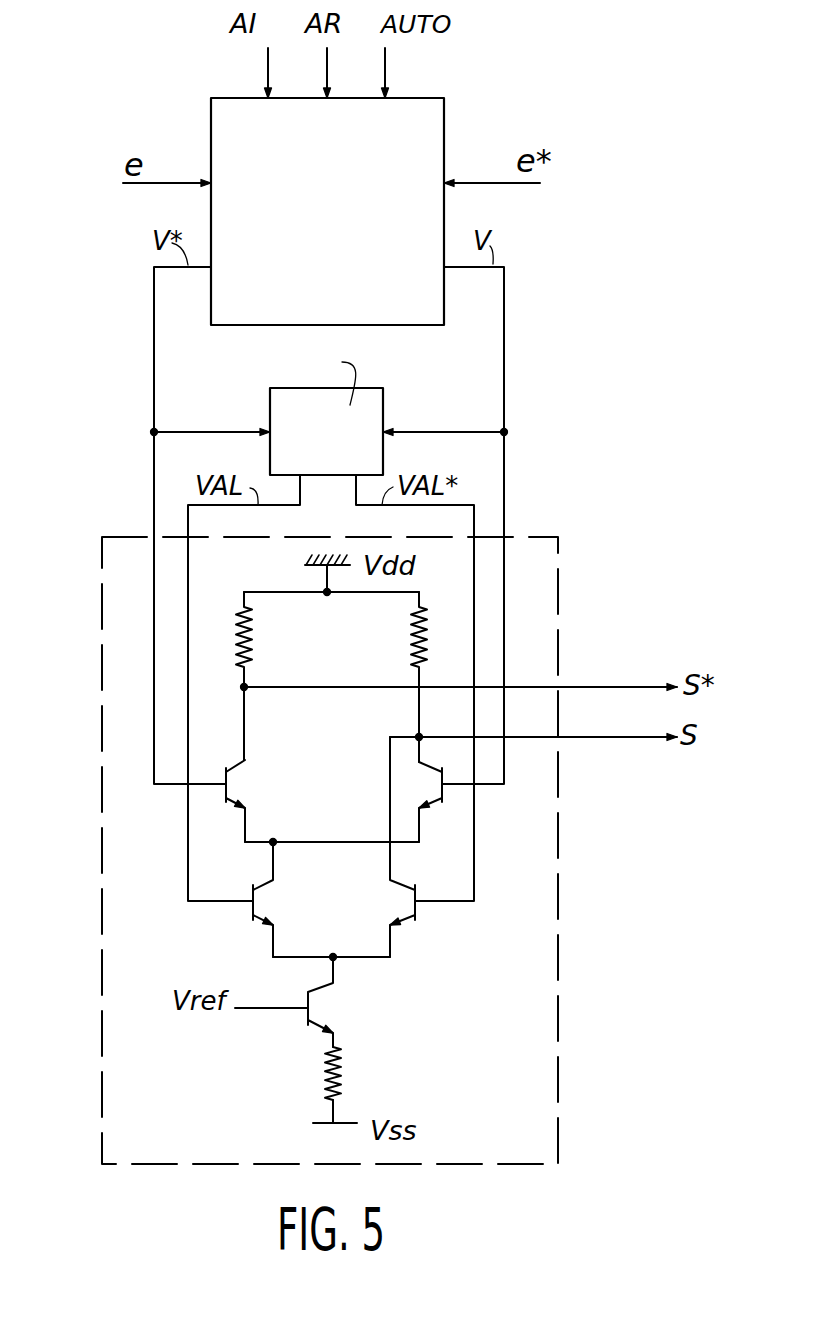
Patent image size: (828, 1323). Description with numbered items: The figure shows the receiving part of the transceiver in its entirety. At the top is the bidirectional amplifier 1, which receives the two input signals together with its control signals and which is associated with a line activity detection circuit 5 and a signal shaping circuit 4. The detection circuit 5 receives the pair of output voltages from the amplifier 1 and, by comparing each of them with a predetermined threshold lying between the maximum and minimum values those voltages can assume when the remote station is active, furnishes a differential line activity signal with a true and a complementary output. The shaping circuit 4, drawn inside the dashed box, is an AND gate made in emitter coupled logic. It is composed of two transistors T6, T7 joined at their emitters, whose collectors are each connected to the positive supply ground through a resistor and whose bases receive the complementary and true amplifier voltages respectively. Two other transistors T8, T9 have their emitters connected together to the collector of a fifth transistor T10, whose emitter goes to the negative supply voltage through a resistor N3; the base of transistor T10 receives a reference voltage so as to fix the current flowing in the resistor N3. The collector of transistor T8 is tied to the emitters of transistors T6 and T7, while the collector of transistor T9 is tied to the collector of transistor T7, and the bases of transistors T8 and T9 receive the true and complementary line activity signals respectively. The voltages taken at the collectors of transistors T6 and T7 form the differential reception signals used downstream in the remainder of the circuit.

The bidirectional amplifier 1 is at (211, 133).
The line activity detection circuit 5 is at (383, 414).
The shaping circuit 4 is at (102, 620).
The transistor T6 is at (283, 778).
The transistor T7 is at (412, 798).
The transistor T8 is at (278, 907).
The transistor T9 is at (386, 904).
The fifth transistor T10 is at (348, 1002).
The resistor N3 is at (337, 1088).